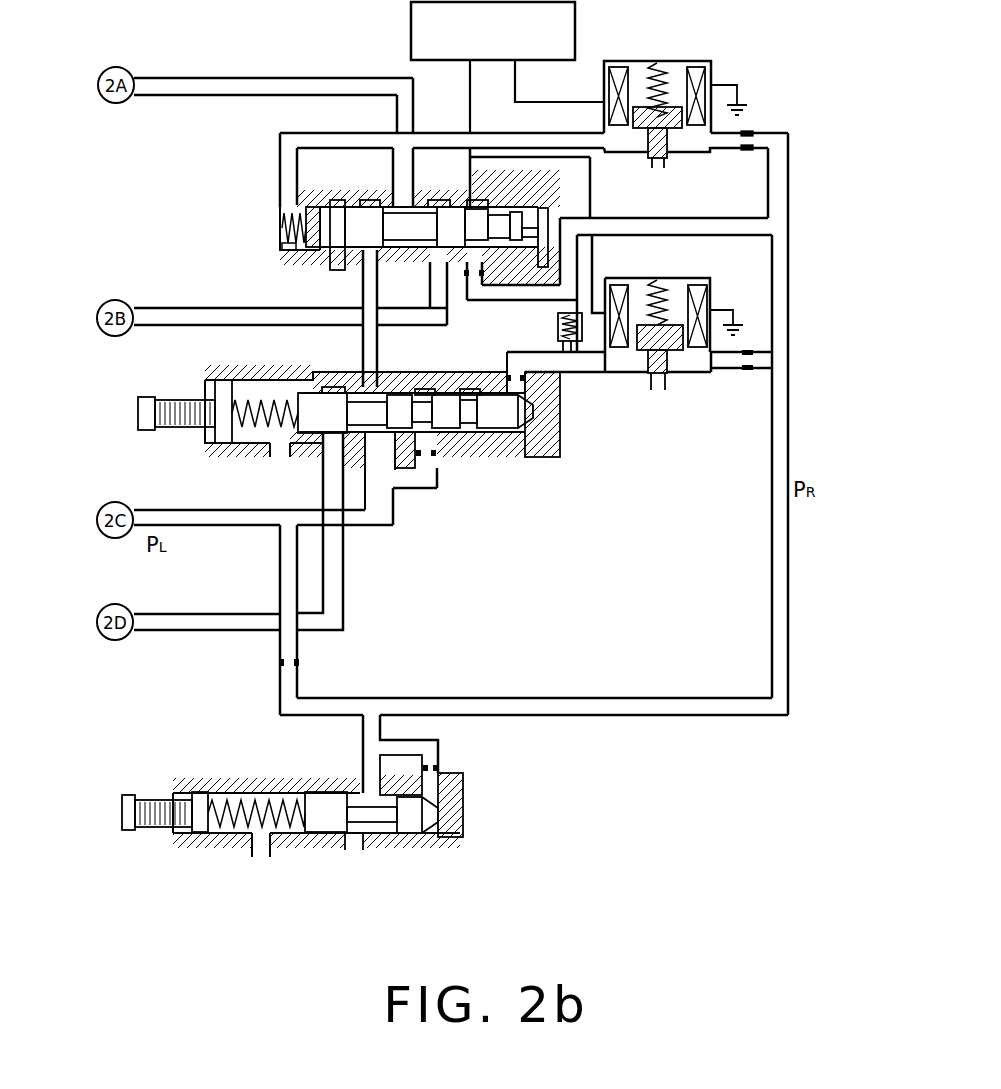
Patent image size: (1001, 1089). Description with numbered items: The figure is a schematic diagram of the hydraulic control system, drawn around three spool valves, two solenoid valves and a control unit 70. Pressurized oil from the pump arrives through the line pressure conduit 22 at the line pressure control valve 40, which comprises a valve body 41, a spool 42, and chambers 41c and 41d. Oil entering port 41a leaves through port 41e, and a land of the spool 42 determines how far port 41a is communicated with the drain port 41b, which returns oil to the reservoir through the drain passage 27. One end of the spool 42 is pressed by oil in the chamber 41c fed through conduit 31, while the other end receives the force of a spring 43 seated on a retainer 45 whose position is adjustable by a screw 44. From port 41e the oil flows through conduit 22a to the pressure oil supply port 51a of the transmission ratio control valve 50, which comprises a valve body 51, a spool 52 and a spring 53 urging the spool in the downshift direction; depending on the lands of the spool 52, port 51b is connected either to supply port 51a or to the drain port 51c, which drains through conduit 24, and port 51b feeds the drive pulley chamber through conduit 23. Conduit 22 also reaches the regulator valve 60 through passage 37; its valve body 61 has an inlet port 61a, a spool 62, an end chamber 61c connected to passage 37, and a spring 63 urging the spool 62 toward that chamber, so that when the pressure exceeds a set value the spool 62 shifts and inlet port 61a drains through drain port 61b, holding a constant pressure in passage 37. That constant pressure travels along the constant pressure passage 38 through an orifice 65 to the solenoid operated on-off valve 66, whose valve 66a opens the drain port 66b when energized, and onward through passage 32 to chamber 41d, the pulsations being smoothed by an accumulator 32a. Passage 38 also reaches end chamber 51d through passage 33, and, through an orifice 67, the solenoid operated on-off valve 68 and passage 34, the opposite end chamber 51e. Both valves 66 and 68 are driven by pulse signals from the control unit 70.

The line pressure conduit 22 is at (192, 510).
The conduit 22a is at (362, 299).
The conduit 23 is at (228, 77).
The conduit 24 is at (248, 322).
The drain passage 27 is at (198, 622).
The conduit 31 is at (421, 489).
The passage 32 is at (593, 362).
The accumulator 32a is at (554, 343).
The passage 33 is at (678, 226).
The passage 34 is at (512, 147).
The passage 37 is at (332, 697).
The constant pressure passage 38 is at (771, 578).
The line pressure control valve 40 is at (420, 471).
The valve body 41 is at (443, 408).
The port 41a is at (380, 440).
The drain port 41b is at (334, 450).
The chamber 41c is at (437, 456).
The chamber 41d is at (534, 430).
The port 41e is at (345, 390).
The spool 42 is at (400, 408).
The spring 43 is at (272, 398).
The screw 44 is at (149, 432).
The retainer 45 is at (222, 440).
The transmission ratio control valve 50 is at (396, 240).
The valve body 51 is at (416, 223).
The pressure oil supply port 51a is at (356, 266).
The port 51b is at (402, 205).
The drain port 51c is at (416, 293).
The end chamber 51d is at (478, 268).
The end chamber 51e is at (275, 235).
The spool 52 is at (352, 215).
The spring 53 is at (278, 212).
The regulator valve 60 is at (324, 804).
The valve body 61 is at (240, 838).
The inlet port 61a is at (367, 790).
The drain port 61b is at (348, 852).
The end chamber 61c is at (440, 834).
The spool 62 is at (324, 830).
The spring 63 is at (265, 792).
The orifice 65 is at (748, 372).
The solenoid operated on-off valve 66 is at (674, 342).
The valve 66a is at (664, 354).
The drain port 66b is at (656, 386).
The orifice 67 is at (749, 134).
The solenoid operated on-off valve 68 is at (706, 60).
The control unit 70 is at (578, 30).